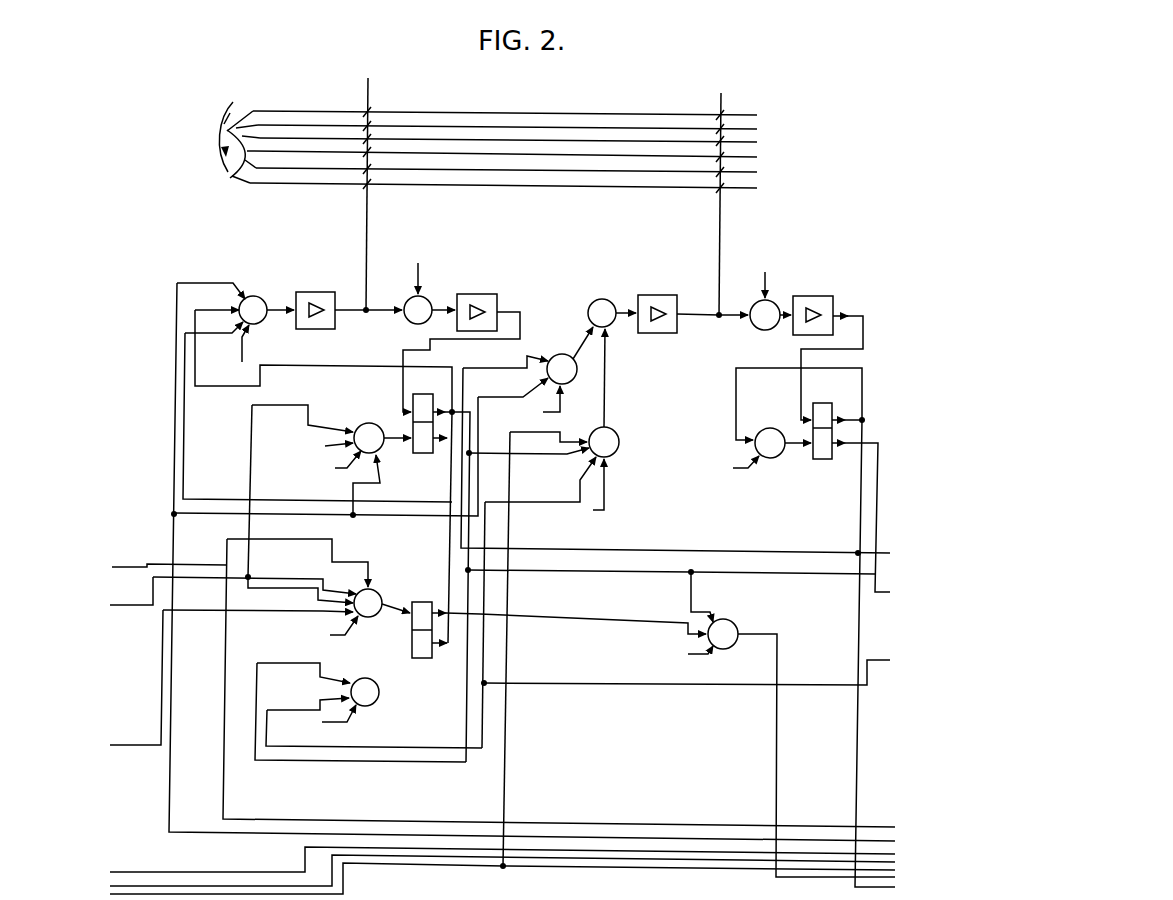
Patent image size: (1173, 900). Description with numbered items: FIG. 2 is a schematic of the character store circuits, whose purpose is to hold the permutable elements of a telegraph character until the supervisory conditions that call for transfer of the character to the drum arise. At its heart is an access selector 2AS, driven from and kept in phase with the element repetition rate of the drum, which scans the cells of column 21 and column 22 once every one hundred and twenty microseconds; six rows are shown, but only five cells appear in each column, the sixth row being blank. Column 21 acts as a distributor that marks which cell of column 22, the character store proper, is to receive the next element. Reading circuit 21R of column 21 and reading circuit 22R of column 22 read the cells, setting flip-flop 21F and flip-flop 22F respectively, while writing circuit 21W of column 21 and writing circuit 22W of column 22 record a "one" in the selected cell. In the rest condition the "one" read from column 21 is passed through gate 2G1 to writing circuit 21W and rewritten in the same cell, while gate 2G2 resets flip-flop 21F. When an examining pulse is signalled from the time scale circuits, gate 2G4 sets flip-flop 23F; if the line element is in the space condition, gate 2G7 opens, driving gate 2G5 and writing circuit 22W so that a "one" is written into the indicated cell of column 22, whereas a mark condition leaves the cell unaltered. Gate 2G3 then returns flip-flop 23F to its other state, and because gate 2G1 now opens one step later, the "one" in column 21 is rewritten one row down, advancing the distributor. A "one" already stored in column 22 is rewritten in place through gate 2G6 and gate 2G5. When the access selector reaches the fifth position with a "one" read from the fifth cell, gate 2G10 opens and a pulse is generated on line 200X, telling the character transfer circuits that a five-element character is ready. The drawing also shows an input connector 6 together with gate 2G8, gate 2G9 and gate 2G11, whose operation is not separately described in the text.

The access selector 2AS is at (243, 133).
The input connector 6 is at (231, 167).
The column 21 is at (366, 184).
The column 22 is at (718, 194).
The gate 2G1 is at (235, 323).
The writing circuit of column 21 21W is at (319, 301).
The gate 2G11 is at (412, 301).
The reading circuit of column 21 21R is at (477, 302).
The gate 2G5 is at (605, 302).
The writing circuit of column 22 22W is at (658, 302).
The gate 2G8 is at (765, 310).
The reading circuit of column 22 22R is at (813, 306).
The gate 2G6 is at (528, 372).
The gate 2G2 is at (331, 460).
The flip-flop 21F is at (408, 414).
The gate 2G7 is at (557, 428).
The flip-flop 22F is at (806, 419).
The gate 2G9 is at (749, 457).
The gate 2G4 is at (281, 595).
The flip-flop 23F is at (427, 620).
The gate 2G3 is at (336, 697).
The gate 2G10 is at (710, 619).
The line 200X is at (816, 753).